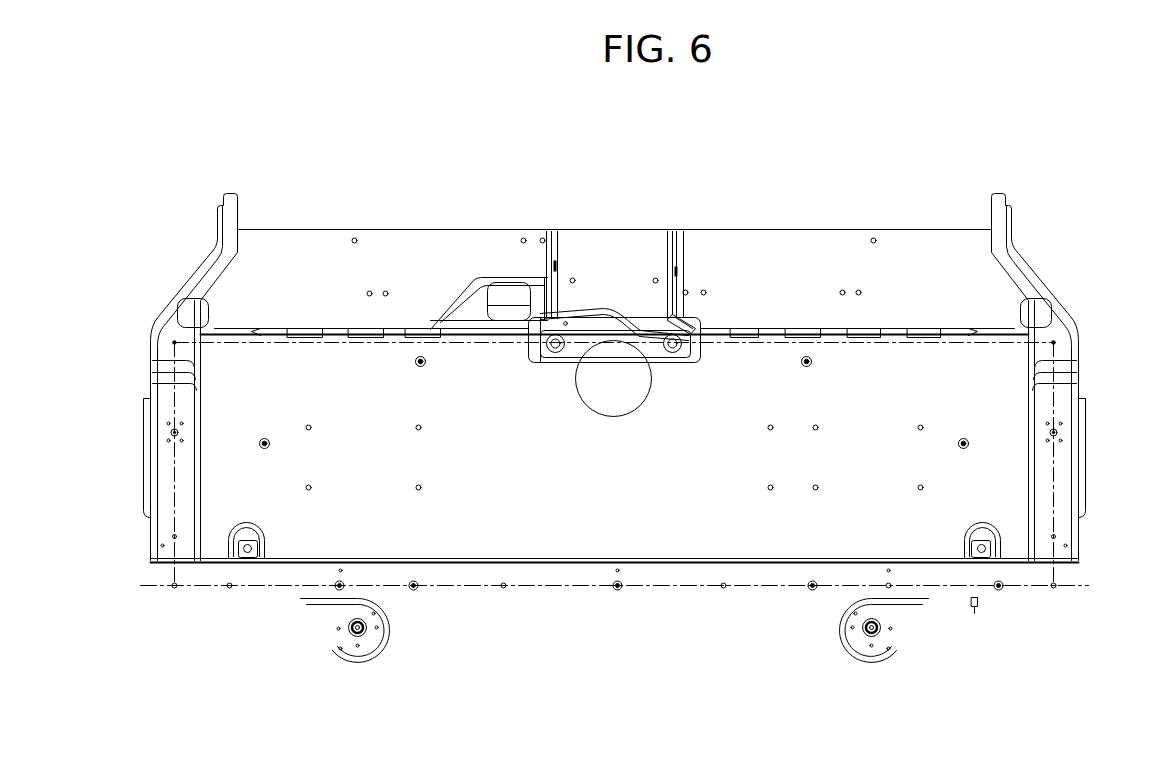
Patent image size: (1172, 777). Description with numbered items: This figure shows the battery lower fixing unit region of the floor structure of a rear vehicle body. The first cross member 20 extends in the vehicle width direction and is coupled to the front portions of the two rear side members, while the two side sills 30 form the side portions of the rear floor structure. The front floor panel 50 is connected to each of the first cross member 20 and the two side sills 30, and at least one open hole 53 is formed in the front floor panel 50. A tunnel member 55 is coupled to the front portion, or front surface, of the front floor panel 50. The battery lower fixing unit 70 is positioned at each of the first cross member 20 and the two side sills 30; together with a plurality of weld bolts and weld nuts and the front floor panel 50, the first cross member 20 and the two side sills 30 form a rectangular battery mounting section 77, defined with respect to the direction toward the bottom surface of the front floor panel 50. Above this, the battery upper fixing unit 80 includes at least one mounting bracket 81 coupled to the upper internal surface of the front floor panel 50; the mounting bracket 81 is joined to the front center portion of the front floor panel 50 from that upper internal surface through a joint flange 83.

The first cross member 20 is at (667, 608).
The side sills 30 is at (143, 350).
The front floor panel 50 is at (899, 282).
The open hole 53 is at (651, 386).
The tunnel member 55 is at (628, 250).
The battery lower fixing unit 70 is at (160, 432).
The battery mounting section 77 is at (1053, 468).
The battery upper fixing unit 80 is at (556, 372).
The mounting bracket 81 is at (586, 330).
The joint flange 83 is at (540, 320).